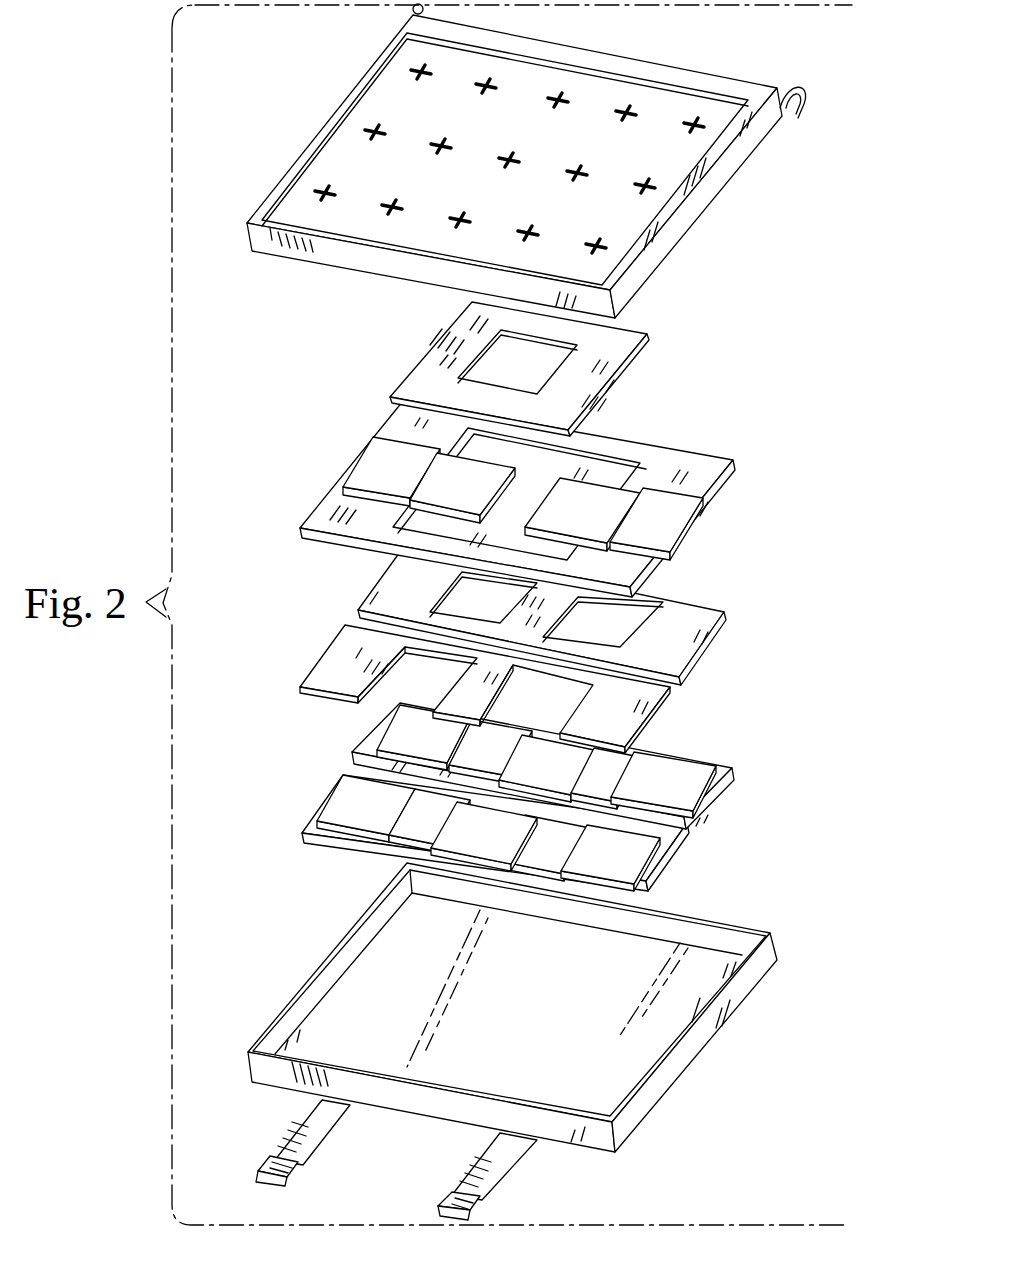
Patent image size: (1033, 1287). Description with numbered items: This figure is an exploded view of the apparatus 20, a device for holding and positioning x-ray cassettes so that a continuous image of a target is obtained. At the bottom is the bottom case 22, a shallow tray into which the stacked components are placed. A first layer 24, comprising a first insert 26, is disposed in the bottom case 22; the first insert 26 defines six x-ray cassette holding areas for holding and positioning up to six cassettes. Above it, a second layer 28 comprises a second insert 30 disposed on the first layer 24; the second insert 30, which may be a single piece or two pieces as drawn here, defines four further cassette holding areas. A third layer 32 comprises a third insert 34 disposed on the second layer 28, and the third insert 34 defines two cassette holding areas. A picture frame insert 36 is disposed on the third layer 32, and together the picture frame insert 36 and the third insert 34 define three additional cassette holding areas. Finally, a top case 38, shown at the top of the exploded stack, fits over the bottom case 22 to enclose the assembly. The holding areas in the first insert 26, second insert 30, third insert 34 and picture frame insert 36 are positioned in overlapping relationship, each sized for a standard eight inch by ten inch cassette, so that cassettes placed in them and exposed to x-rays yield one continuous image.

The apparatus 20 is at (248, 74).
The bottom case 22 is at (708, 1028).
The first layer 24 is at (300, 767).
The first insert 26 is at (690, 823).
The second layer 28 is at (298, 615).
The second insert 30 is at (665, 702).
The third layer 32 is at (316, 455).
The third insert 34 is at (718, 487).
The picture frame insert 36 is at (620, 378).
The top case 38 is at (708, 198).